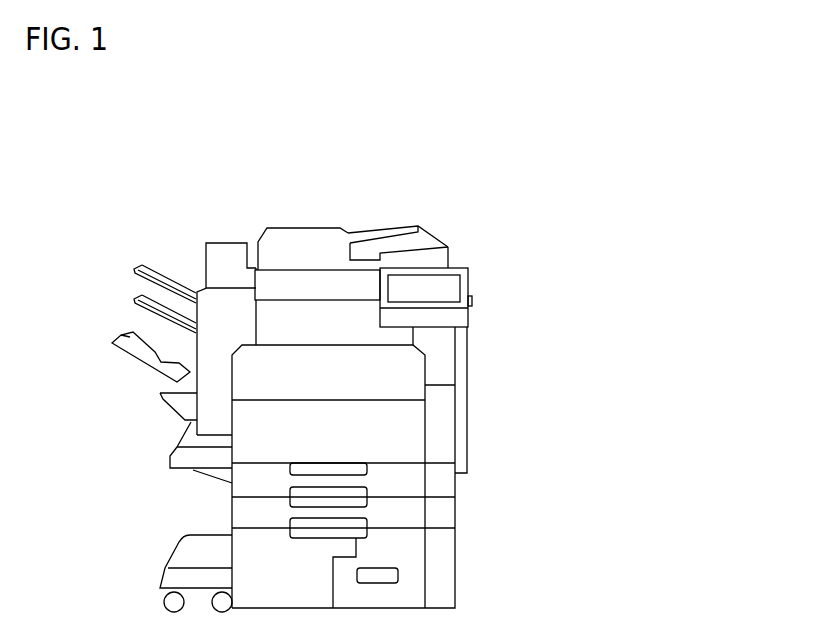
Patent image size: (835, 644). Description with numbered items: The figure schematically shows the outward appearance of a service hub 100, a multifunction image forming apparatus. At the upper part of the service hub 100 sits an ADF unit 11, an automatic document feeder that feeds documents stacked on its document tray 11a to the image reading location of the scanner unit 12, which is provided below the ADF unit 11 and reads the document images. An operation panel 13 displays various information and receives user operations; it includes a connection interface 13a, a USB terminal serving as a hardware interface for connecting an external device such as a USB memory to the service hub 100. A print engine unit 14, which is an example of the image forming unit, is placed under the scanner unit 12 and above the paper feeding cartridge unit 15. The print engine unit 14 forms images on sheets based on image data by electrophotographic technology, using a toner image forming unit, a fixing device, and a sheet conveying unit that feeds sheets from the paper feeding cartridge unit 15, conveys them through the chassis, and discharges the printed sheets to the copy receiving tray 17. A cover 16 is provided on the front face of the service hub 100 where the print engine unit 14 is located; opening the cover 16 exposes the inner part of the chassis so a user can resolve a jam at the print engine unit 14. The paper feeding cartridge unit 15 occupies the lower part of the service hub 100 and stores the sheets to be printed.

The service hub 100 is at (453, 122).
The ADF unit 11 is at (437, 260).
The document tray 11a is at (387, 243).
The scanner unit 12 is at (265, 283).
The operation panel 13 is at (437, 283).
The connection interface 13a is at (472, 300).
The print engine unit 14 is at (384, 476).
The cover 16 is at (417, 373).
The paper feeding cartridge unit 15 is at (417, 515).
The copy receiving tray 17 is at (390, 337).